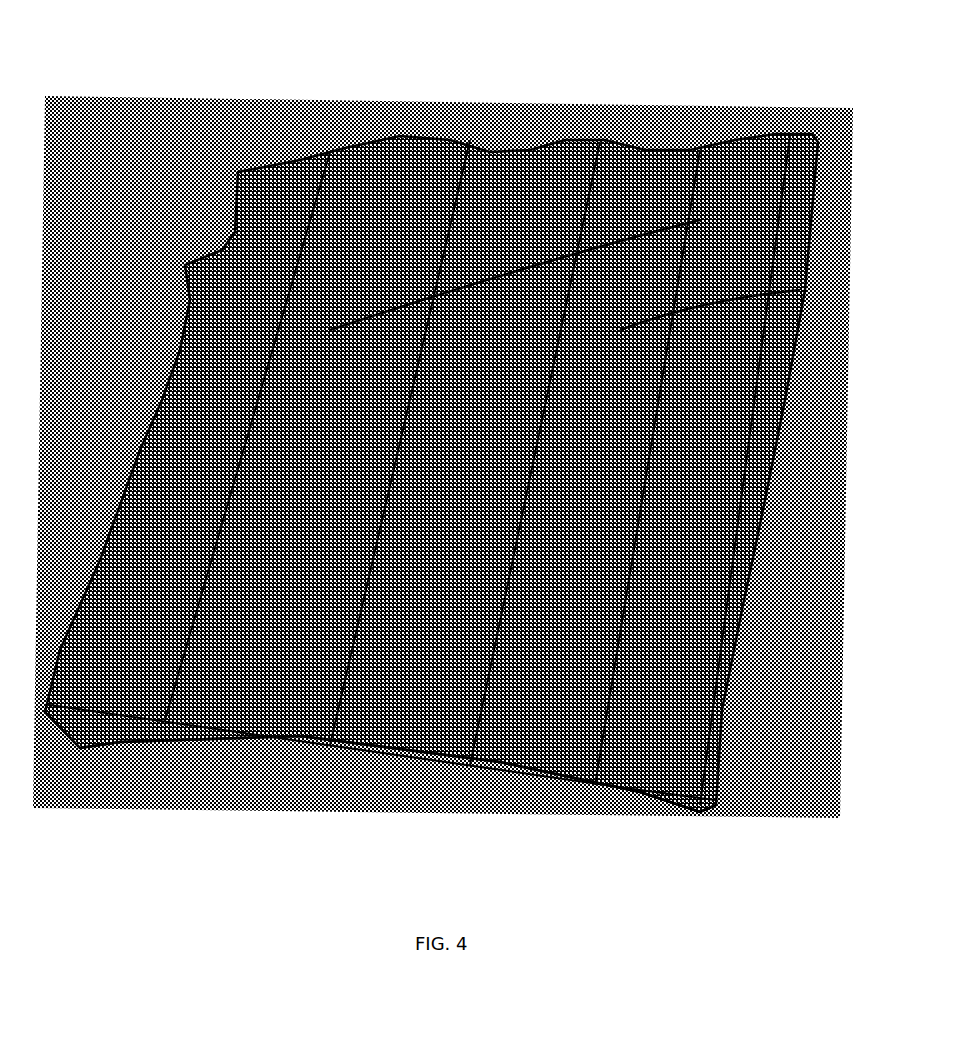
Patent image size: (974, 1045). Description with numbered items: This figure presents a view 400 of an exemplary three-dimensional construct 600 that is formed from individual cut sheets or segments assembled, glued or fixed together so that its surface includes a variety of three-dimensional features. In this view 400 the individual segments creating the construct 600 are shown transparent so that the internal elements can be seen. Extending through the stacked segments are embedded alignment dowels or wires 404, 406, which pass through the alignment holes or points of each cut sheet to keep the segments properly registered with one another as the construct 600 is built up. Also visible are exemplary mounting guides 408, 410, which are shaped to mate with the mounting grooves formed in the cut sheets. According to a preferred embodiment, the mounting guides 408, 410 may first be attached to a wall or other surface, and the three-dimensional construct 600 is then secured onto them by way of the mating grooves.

The view of the three-dimensional construct 400 is at (653, 82).
The alignment dowel/wire 404 is at (120, 742).
The alignment dowel/wire 406 is at (642, 785).
The mounting guide 408 is at (342, 333).
The mounting guide 410 is at (622, 325).
The three-dimensional construct 600 is at (271, 750).